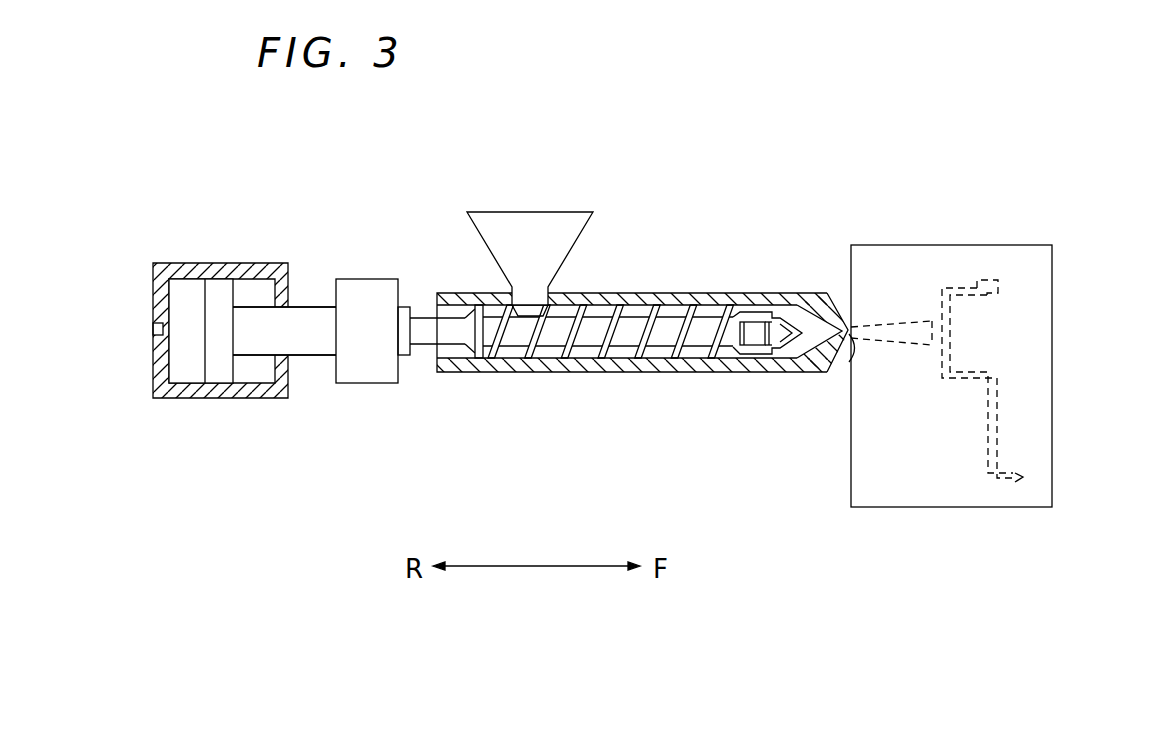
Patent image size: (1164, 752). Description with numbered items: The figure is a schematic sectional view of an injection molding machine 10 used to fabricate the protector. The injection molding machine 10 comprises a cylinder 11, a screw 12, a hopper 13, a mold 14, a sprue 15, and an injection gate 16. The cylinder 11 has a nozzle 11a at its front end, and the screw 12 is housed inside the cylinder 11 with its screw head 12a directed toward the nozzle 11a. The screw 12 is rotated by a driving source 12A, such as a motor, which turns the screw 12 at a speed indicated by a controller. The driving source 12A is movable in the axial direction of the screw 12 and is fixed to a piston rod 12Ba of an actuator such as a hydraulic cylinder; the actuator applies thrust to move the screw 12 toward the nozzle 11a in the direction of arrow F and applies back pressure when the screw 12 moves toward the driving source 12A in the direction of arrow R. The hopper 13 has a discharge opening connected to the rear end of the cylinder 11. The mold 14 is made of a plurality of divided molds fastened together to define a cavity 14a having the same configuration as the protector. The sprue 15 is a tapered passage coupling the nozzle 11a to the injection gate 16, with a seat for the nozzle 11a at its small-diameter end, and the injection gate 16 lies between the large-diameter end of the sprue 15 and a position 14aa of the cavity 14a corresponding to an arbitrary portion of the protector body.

The injection molding machine 10 is at (646, 370).
The cylinder 11 is at (677, 292).
The nozzle 11a is at (847, 338).
The screw 12 is at (208, 262).
The driving source 12A is at (387, 384).
The piston rod 12Ba is at (317, 356).
The screw head 12a is at (790, 332).
The hopper 13 is at (590, 218).
The mold 14 is at (935, 508).
The cavity 14a is at (995, 442).
The position of the cavity 14aa is at (947, 325).
The sprue 15 is at (880, 322).
The injection gate 16 is at (940, 345).